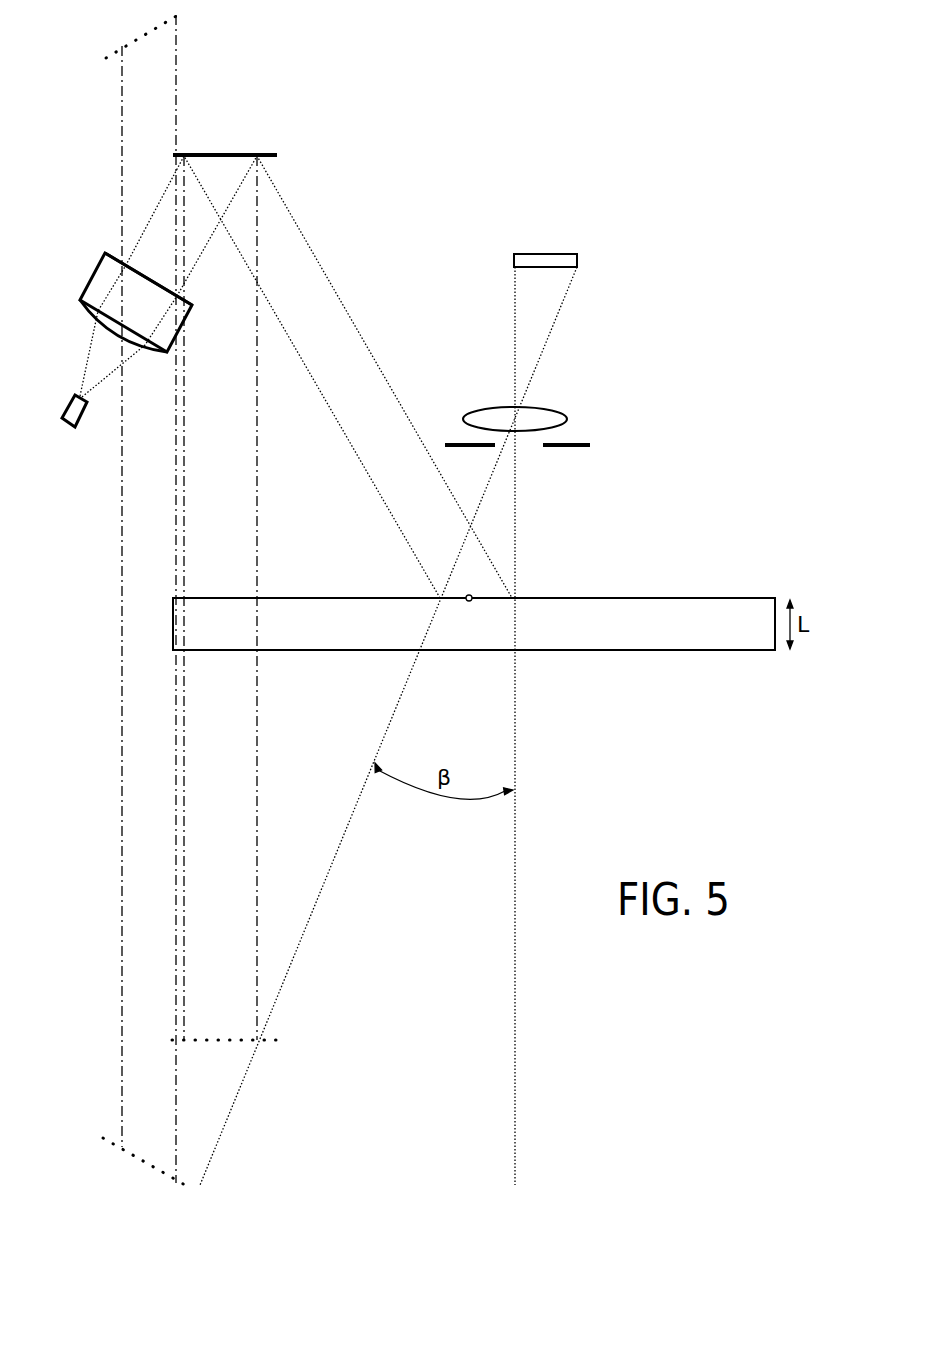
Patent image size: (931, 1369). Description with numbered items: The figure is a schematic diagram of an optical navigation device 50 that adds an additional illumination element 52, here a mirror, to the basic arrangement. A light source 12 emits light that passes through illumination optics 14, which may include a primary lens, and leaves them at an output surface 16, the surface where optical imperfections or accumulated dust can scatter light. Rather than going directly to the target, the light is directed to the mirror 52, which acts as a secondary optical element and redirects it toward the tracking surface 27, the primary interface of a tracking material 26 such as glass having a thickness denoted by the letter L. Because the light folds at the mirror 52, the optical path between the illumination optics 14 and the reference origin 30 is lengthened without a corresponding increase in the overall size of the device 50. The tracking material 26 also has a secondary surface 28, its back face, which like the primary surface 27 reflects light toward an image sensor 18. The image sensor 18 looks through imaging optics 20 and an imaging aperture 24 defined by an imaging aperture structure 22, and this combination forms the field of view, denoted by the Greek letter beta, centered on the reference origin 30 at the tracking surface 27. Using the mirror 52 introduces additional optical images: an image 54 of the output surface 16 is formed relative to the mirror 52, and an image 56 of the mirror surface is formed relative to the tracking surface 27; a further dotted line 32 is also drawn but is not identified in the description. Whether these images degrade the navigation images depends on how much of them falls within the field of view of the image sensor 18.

The light source 12 is at (68, 400).
The illumination optics 14 is at (92, 278).
The output surface 16 is at (136, 265).
The image sensor 18 is at (577, 260).
The imaging optics 20 is at (557, 410).
The imaging aperture structure 22 is at (585, 443).
The imaging aperture 24 is at (537, 452).
The tracking material 26 is at (578, 620).
The primary interface 27 is at (655, 589).
The secondary surface 28 is at (707, 640).
The reference origin 30 is at (472, 597).
The reference plane 32 is at (128, 1153).
The optical navigation device 50 is at (504, 125).
The additional illumination element 52 is at (205, 153).
The image of the output surface 54 is at (125, 43).
The image of the mirror surface 56 is at (222, 1042).